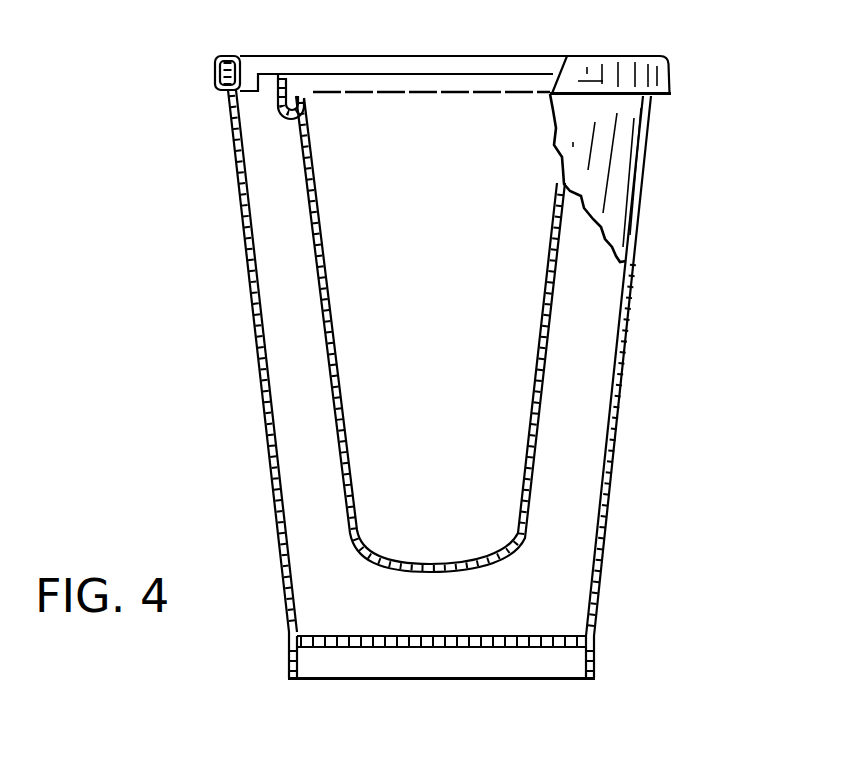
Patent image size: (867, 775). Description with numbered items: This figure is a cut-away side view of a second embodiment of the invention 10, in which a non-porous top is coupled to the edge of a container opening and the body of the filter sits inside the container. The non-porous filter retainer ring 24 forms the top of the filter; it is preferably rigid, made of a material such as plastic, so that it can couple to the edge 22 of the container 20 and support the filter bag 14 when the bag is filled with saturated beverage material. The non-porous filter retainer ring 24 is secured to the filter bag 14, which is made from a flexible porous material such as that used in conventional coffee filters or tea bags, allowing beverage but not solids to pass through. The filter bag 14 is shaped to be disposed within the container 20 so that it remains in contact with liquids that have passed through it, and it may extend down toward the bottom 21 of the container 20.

The second embodiment of the invention 10 is at (473, 358).
The filter bag 14 is at (327, 346).
The container 20 is at (268, 479).
The bottom of the container 21 is at (290, 668).
The edge of the container 22 is at (225, 55).
The non-porous filter retainer ring 24 is at (216, 84).